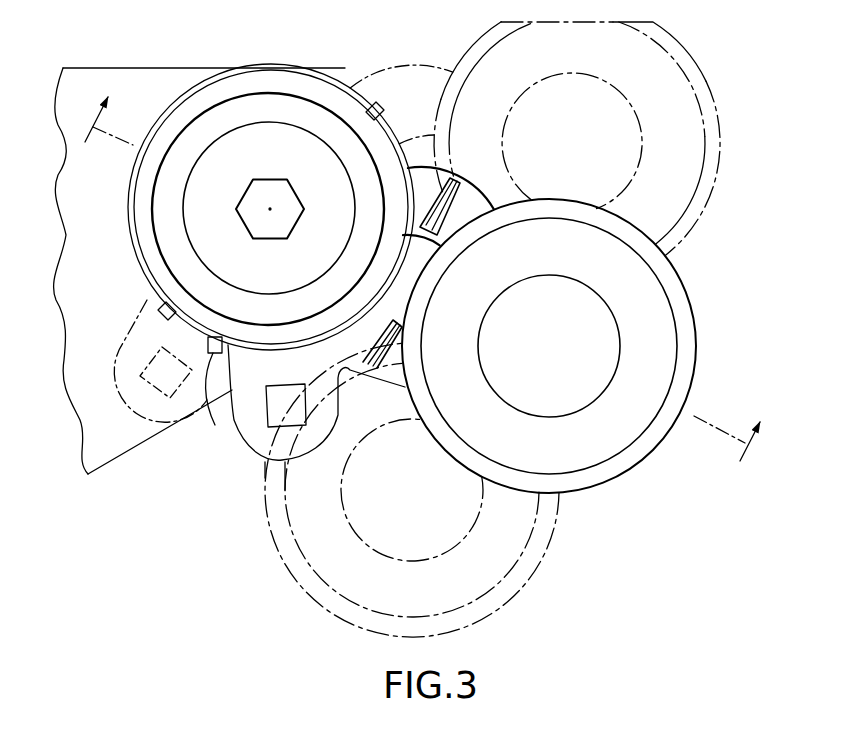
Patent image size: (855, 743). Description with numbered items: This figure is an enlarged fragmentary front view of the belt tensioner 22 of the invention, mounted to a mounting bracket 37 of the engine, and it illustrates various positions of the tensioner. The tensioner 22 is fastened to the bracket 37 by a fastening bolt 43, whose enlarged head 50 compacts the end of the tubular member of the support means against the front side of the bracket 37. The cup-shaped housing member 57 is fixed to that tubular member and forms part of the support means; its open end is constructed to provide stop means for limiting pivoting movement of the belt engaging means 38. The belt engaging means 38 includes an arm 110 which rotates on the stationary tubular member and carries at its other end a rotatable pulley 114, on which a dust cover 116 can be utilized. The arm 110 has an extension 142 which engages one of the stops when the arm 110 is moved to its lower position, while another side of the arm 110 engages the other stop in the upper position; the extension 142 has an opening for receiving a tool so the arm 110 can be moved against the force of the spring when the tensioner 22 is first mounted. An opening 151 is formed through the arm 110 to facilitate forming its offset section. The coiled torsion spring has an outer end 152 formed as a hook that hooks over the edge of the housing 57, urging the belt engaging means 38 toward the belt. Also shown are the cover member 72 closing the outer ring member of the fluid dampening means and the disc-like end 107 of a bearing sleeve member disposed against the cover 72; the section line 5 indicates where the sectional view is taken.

The section line 5- 5 is at (428, 273).
The belt tensioner 22 is at (338, 65).
The mounting bracket 37 is at (84, 322).
The belt engaging means 38 is at (498, 188).
The fastening bolt 43 is at (273, 187).
The enlarged head 50 is at (279, 226).
The cup-shaped housing member 57 is at (192, 90).
The cover member 72 is at (174, 246).
The disc-like end 107 is at (204, 191).
The arm 110 is at (410, 166).
The pulley 114 is at (705, 83).
The dust cover 116 is at (553, 291).
The extension 142 is at (263, 442).
The opening 151 is at (451, 177).
The outer end 152 is at (216, 430).